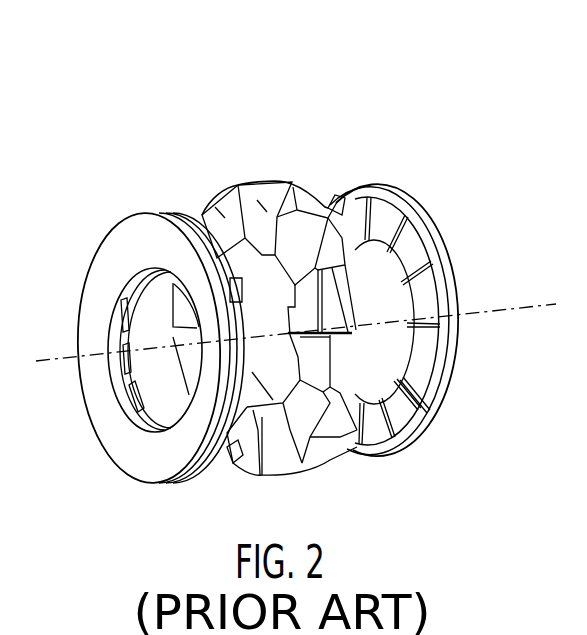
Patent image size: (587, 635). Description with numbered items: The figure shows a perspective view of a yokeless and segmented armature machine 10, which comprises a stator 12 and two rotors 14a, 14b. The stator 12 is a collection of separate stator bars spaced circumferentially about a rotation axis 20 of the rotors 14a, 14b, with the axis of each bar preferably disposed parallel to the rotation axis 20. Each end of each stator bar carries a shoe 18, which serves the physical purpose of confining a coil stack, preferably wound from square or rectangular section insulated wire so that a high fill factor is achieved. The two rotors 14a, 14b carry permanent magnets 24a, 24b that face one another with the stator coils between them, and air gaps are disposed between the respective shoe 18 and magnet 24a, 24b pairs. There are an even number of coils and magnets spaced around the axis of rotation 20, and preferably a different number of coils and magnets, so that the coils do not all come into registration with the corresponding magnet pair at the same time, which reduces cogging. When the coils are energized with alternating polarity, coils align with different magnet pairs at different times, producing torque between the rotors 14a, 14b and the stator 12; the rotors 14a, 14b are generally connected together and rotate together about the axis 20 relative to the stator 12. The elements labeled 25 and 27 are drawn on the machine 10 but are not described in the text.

The machine 10 is at (232, 76).
The stator 12 is at (300, 200).
The rotor 14a is at (140, 213).
The rotor 14b is at (398, 183).
The shoe 18 is at (277, 453).
The rotation axis 20 is at (49, 362).
The permanent magnet 24a is at (230, 450).
The permanent magnet 24b is at (412, 417).
The ribs 25 is at (428, 240).
The protrusions 27 is at (263, 213).